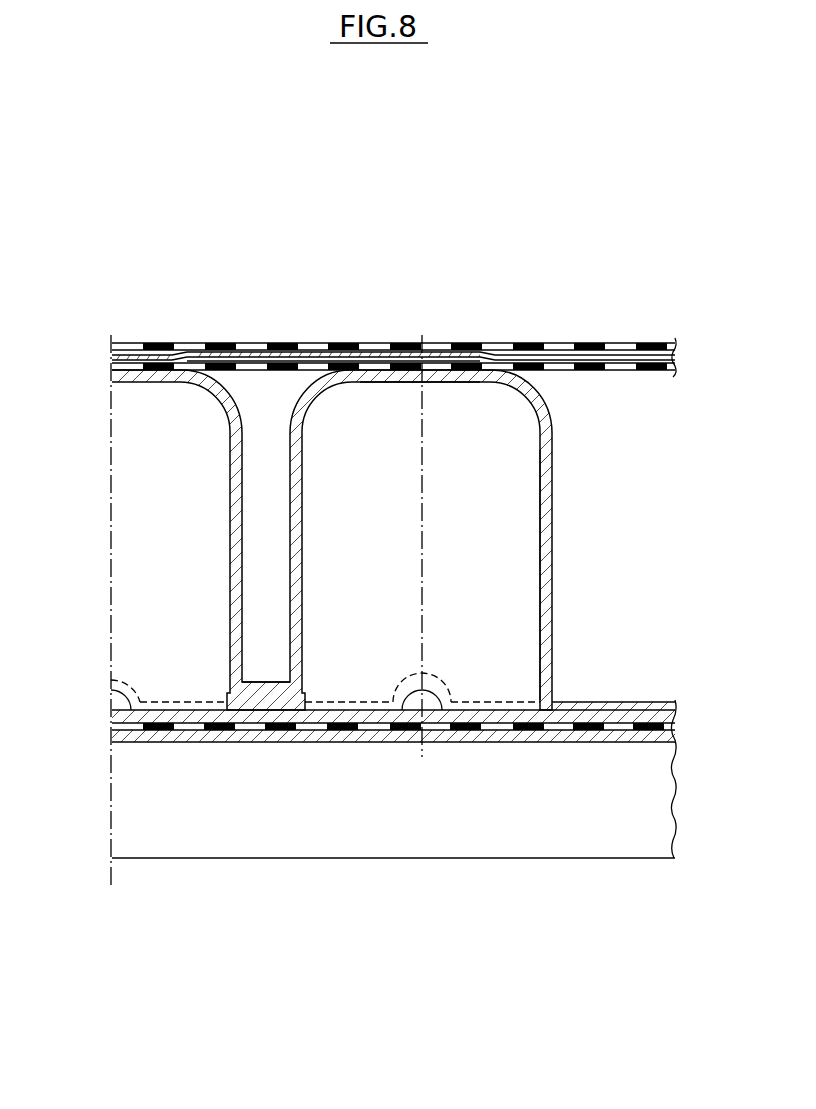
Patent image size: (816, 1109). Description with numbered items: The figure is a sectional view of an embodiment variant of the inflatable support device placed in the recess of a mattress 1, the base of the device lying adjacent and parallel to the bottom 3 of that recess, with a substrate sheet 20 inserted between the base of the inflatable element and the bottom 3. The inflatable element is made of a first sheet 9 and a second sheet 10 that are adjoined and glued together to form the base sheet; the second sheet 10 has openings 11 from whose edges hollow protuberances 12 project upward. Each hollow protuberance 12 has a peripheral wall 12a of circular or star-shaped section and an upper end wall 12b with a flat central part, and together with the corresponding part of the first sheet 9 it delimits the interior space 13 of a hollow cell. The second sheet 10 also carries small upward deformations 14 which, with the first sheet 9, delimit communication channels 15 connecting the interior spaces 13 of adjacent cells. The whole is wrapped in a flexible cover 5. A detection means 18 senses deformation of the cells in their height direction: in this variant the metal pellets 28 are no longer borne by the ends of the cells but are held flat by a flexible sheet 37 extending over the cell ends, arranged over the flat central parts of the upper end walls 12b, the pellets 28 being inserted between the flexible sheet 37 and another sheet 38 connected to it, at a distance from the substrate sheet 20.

The mattress 1 is at (667, 767).
The bottom 3 is at (230, 738).
The flexible cover 5 is at (189, 343).
The first sheet 9 is at (502, 717).
The second sheet 10 is at (623, 706).
The opening 11 is at (546, 702).
The hollow protuberance 12 is at (556, 467).
The peripheral wall 12a is at (548, 531).
The upper end wall 12b is at (385, 372).
The interior space 13 is at (513, 553).
The small upward deformation 14 is at (264, 682).
The communication channel 15 is at (415, 705).
The detection means 18 is at (667, 726).
The substrate sheet 20 is at (617, 737).
The metal pellet 28 is at (438, 356).
The flexible sheet 37 is at (623, 366).
The another sheet 38 is at (553, 355).